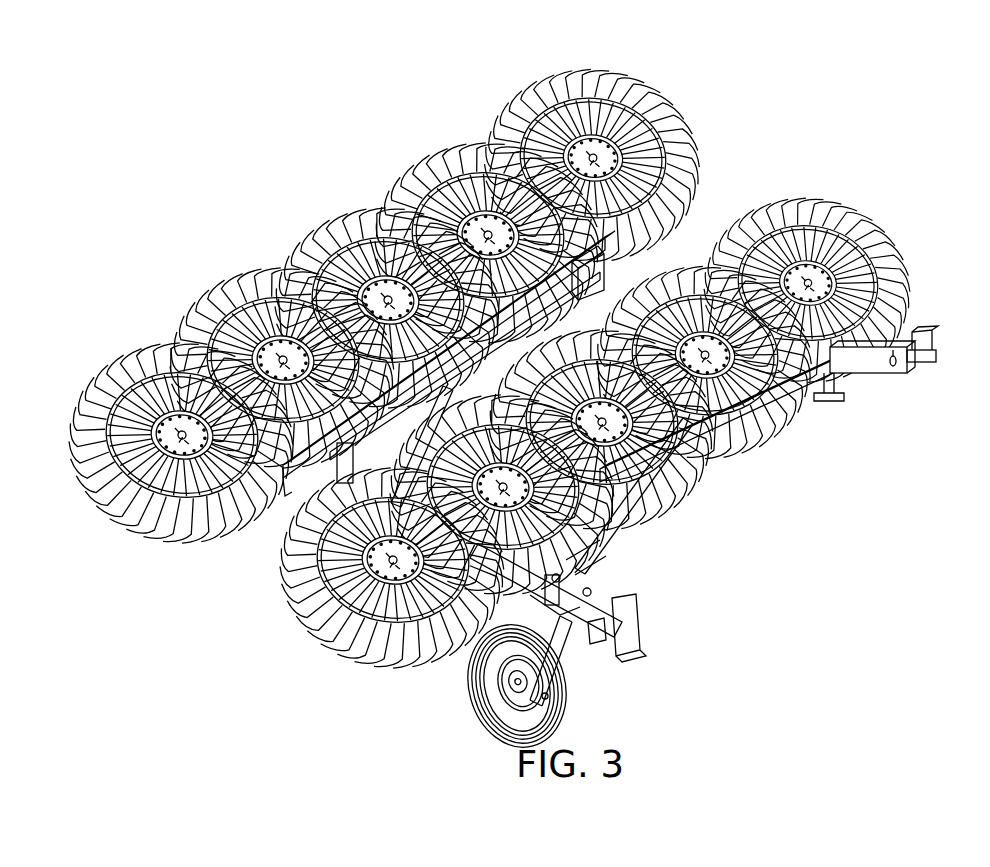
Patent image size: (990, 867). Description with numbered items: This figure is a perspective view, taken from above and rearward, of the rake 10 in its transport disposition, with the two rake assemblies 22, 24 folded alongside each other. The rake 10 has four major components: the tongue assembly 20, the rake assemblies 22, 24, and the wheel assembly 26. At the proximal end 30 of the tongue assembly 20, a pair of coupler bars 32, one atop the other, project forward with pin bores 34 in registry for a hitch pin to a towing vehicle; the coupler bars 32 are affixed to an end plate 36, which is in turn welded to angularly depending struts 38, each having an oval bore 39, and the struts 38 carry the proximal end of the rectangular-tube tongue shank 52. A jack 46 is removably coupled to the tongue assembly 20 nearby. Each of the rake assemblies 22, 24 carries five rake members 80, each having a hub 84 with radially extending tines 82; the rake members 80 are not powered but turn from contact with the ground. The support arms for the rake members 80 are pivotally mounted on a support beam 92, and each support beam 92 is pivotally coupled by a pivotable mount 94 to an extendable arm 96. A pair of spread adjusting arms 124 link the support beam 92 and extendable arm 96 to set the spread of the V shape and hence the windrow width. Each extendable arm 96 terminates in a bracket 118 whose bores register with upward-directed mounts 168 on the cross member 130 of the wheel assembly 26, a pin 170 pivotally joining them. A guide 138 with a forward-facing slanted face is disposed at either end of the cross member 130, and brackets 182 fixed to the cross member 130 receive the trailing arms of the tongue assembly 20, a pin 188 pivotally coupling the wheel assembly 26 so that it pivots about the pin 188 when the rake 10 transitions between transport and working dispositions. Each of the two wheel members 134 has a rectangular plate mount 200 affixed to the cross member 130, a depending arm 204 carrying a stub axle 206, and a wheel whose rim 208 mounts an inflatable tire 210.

The rake 10 is at (270, 131).
The tongue assembly 20 is at (742, 424).
The rake assembly 22 is at (329, 233).
The rake assembly 24 is at (809, 195).
The wheel assembly 26 is at (622, 642).
The proximal end 30 is at (912, 371).
The coupler bars 32 is at (936, 357).
The pin bores 34 is at (932, 337).
The end plate 36 is at (908, 372).
The depending struts 38 is at (850, 381).
The oval bore 39 is at (893, 368).
The jack 46 is at (826, 400).
The tongue shank 52 is at (730, 446).
The rake members 80 is at (462, 158).
The tines 82 is at (102, 392).
The hub 84 is at (172, 512).
The support beam 92 is at (296, 496).
The pivotable mount 94 is at (476, 376).
The extendable arm 96 is at (427, 424).
The bracket 118 is at (584, 582).
The spread adjusting arms 124 is at (588, 318).
The cross member 130 is at (596, 642).
The wheel members 134 is at (340, 628).
The guide 138 is at (648, 632).
The mounts 168 is at (556, 602).
The pin 170 is at (552, 590).
The bracket 182 is at (582, 579).
The pin 188 is at (592, 592).
The mount 200 is at (580, 662).
The depending arm 204 is at (550, 696).
The stub axle 206 is at (493, 724).
The rim 208 is at (483, 705).
The inflatable tire 210 is at (484, 695).